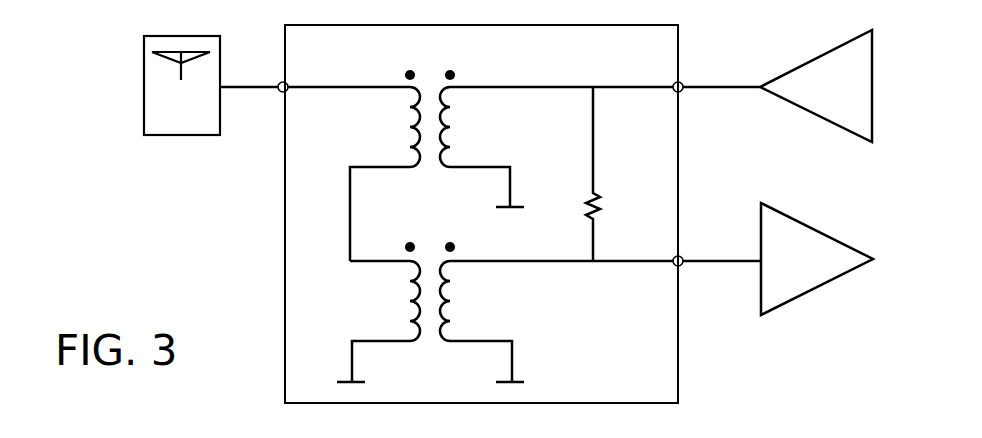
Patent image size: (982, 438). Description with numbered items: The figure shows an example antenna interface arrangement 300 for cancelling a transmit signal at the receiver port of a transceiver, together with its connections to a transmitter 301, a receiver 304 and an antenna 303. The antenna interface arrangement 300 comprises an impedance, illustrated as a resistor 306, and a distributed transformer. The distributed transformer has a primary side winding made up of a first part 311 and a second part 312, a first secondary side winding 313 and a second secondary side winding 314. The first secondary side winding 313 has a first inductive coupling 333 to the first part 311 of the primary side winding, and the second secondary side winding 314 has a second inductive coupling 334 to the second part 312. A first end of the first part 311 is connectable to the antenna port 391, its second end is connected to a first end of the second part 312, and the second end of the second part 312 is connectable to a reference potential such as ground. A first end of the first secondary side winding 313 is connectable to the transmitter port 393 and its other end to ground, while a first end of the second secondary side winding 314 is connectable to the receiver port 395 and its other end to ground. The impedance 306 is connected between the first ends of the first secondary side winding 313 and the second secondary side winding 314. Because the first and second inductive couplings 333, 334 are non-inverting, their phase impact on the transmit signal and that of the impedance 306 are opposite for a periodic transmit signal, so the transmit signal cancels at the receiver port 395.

The antenna interface arrangement 300 is at (481, 214).
The transmitter 301 is at (777, 86).
The antenna 303 is at (211, 85).
The receiver 304 is at (778, 259).
The impedance 306 is at (600, 213).
The first part of the primary side winding 311 is at (385, 174).
The second part of the primary side winding 312 is at (378, 321).
The first secondary side winding 313 is at (482, 147).
The second secondary side winding 314 is at (482, 321).
The first inductive coupling 333 is at (480, 147).
The second inductive coupling 334 is at (505, 295).
The antenna port 391 is at (278, 85).
The transmitter port 393 is at (673, 85).
The receiver port 395 is at (673, 259).